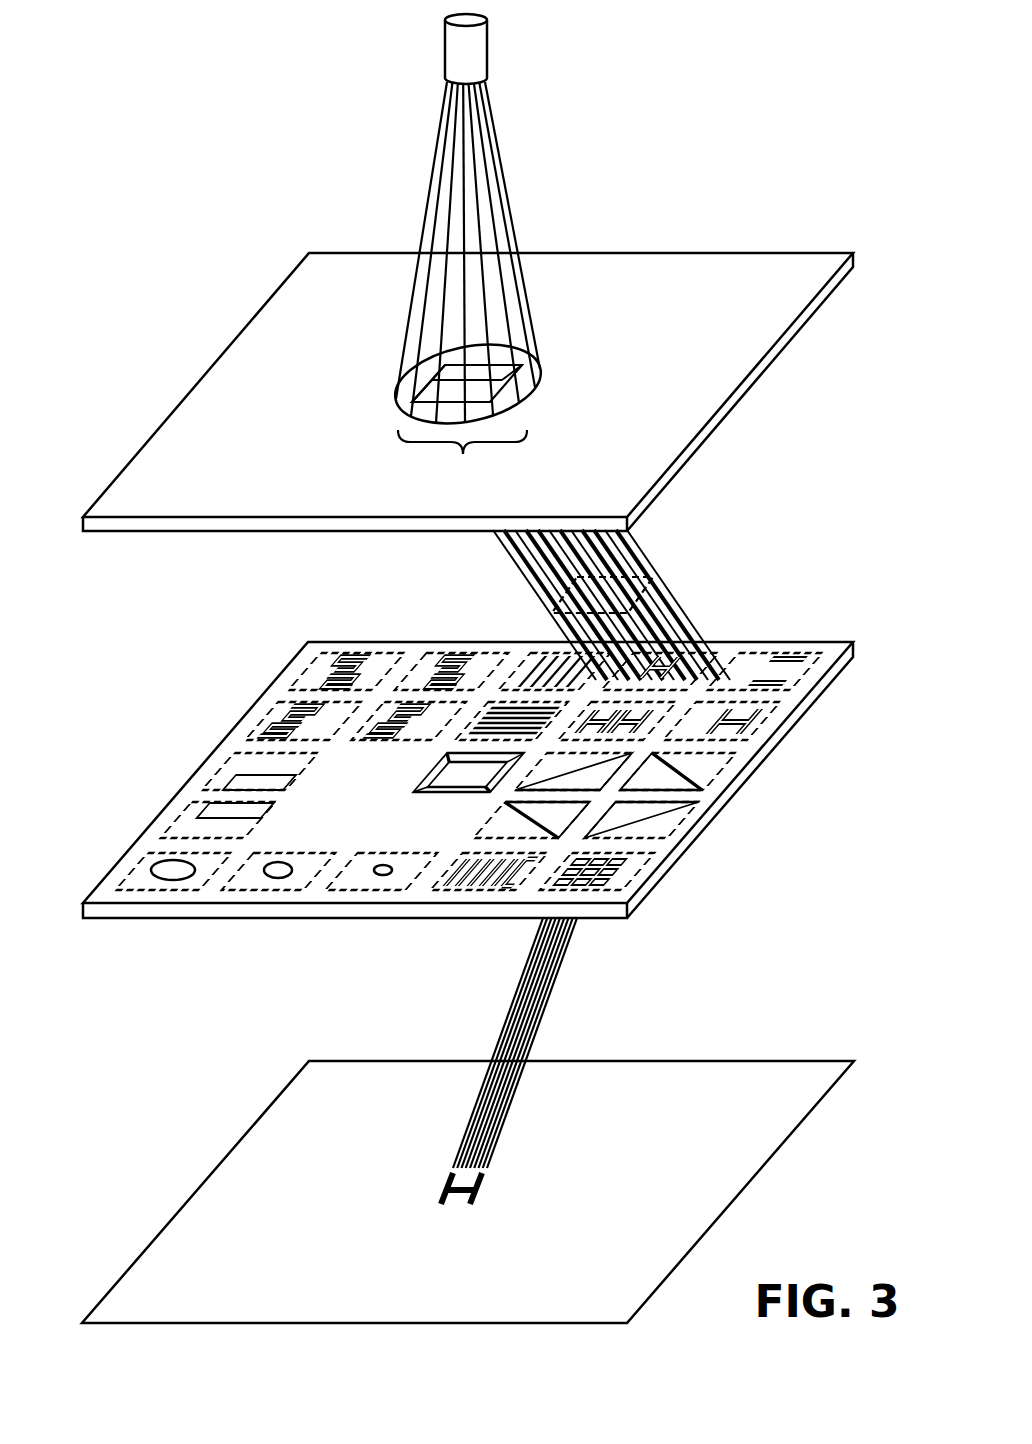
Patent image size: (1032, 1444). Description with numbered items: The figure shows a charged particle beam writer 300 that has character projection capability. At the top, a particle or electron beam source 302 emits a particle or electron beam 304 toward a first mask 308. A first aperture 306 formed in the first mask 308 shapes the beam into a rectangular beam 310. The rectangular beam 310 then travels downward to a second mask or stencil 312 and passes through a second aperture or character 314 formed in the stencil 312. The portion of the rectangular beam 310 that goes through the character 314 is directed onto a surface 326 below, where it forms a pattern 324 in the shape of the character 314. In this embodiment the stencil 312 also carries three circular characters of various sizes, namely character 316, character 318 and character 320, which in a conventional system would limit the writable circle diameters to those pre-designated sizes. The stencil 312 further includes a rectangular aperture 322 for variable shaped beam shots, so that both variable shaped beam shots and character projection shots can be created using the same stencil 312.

The charged particle beam writer 300 is at (222, 170).
The particle or electron beam source 302 is at (477, 52).
The particle or electron beam 304 is at (495, 168).
The first aperture 306 is at (555, 352).
The first mask 308 is at (705, 437).
The rectangular beam 310 is at (668, 575).
The stencil 312 is at (705, 818).
The character 314 is at (716, 640).
The circular character 316 is at (171, 880).
The circular character 318 is at (276, 878).
The circular character 320 is at (382, 875).
The rectangular aperture 322 is at (424, 782).
The pattern 324 is at (478, 1190).
The surface 326 is at (695, 1198).